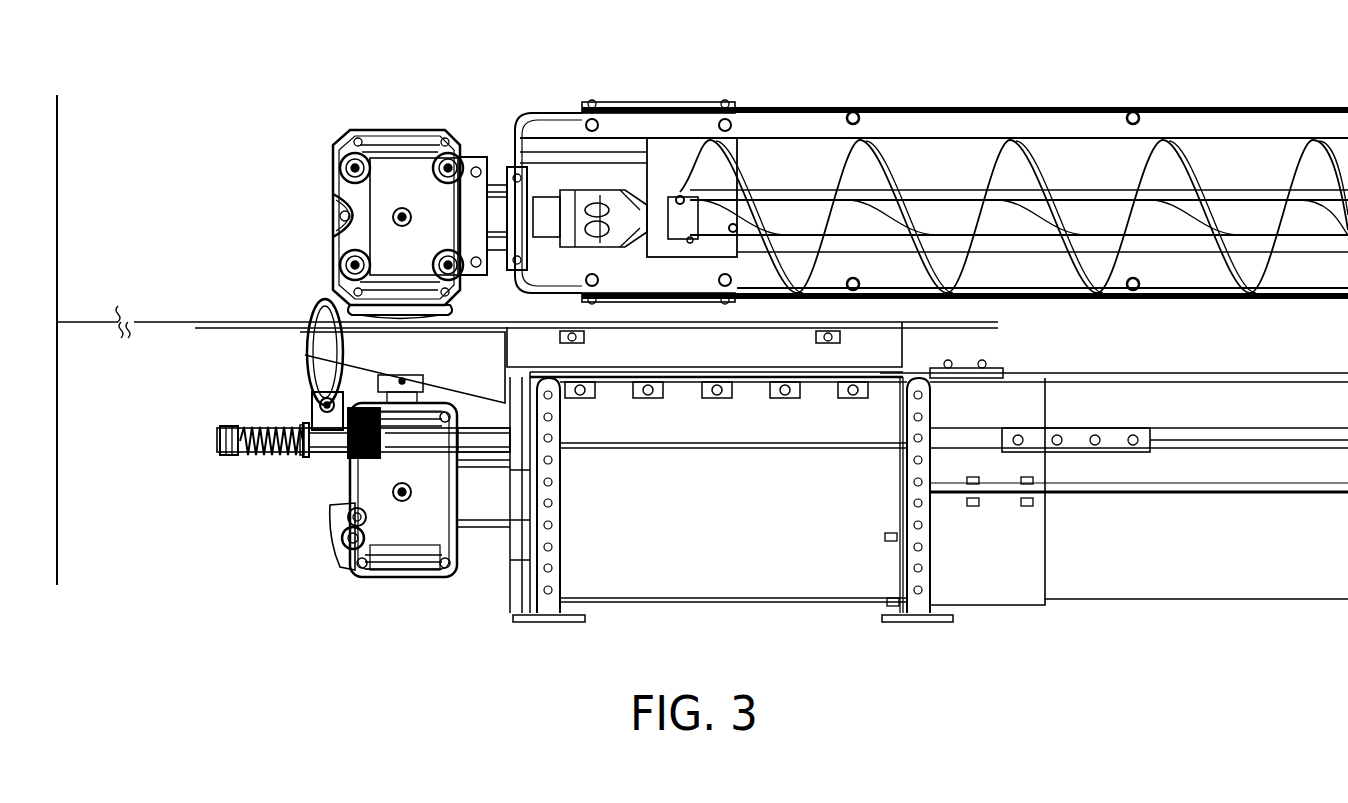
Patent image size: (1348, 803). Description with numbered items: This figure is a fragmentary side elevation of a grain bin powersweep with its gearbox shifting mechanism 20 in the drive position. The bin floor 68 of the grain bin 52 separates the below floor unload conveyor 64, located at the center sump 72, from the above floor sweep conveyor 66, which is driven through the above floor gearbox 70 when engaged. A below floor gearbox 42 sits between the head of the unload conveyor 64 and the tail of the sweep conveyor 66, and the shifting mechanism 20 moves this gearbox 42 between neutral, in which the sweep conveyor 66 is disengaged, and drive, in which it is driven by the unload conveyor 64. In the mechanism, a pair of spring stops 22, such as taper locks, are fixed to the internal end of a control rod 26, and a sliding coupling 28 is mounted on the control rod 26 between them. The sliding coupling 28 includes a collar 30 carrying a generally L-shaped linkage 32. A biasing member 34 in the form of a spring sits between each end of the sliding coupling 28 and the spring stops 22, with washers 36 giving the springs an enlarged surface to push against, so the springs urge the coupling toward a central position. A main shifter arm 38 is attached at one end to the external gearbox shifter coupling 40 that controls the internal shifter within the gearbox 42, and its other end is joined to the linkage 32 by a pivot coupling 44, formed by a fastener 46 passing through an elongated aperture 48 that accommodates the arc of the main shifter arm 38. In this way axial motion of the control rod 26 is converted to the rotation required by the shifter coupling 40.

The gearbox shifting mechanism 20 is at (256, 562).
The spring stops 22 is at (228, 455).
The control rod 26 is at (1262, 447).
The sliding coupling 28 is at (296, 410).
The collar 30 is at (318, 446).
The linkage 32 is at (318, 412).
The biasing member 34 is at (272, 456).
The washers 36 is at (302, 421).
The main shifter arm 38 is at (351, 520).
The gearbox shifter coupling 40 is at (350, 562).
The gearbox 42 is at (383, 548).
The pivot coupling 44 is at (277, 252).
The fastener 46 is at (312, 392).
The aperture 48 is at (341, 313).
The grain bin 52 is at (57, 168).
The unload conveyor 64 is at (1178, 594).
The sweep conveyor 66 is at (980, 116).
The bin floor 68 is at (160, 320).
The above floor gearbox 70 is at (401, 178).
The center sump 72 is at (656, 594).